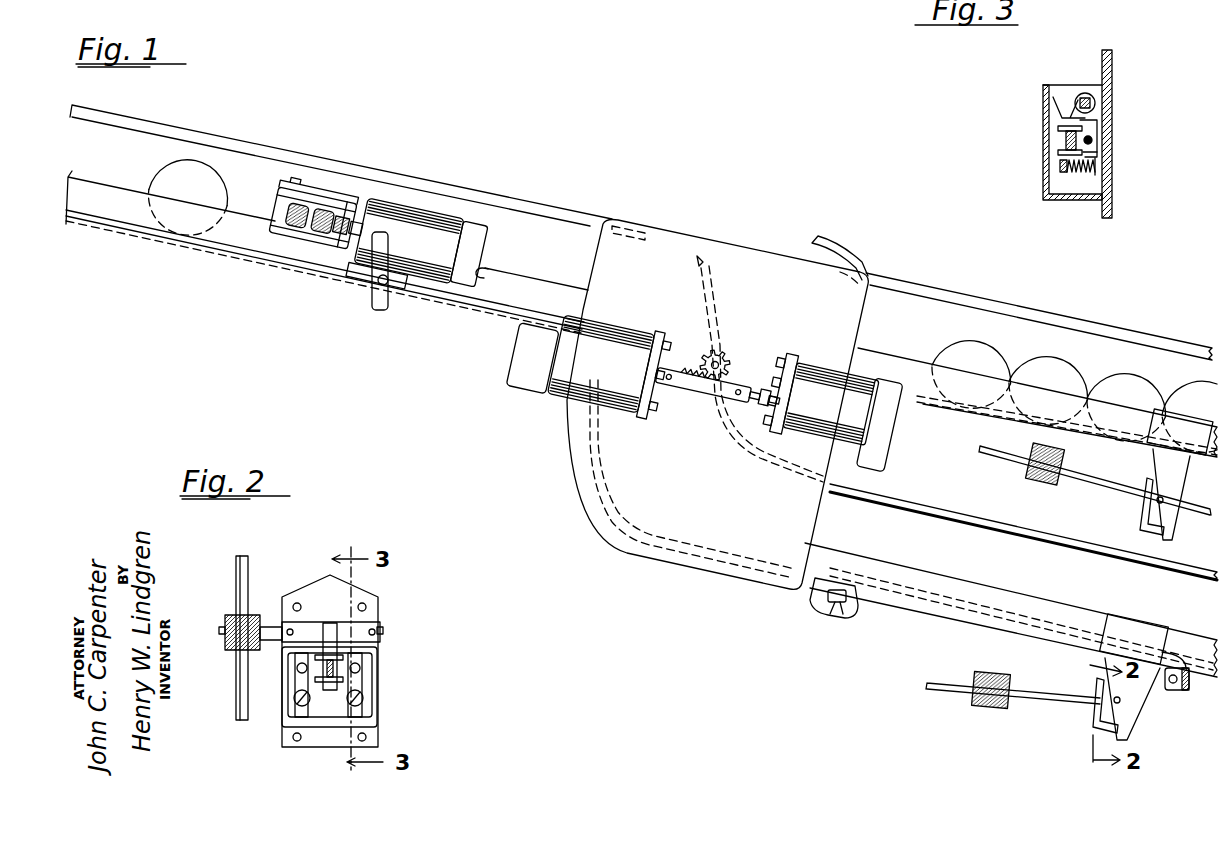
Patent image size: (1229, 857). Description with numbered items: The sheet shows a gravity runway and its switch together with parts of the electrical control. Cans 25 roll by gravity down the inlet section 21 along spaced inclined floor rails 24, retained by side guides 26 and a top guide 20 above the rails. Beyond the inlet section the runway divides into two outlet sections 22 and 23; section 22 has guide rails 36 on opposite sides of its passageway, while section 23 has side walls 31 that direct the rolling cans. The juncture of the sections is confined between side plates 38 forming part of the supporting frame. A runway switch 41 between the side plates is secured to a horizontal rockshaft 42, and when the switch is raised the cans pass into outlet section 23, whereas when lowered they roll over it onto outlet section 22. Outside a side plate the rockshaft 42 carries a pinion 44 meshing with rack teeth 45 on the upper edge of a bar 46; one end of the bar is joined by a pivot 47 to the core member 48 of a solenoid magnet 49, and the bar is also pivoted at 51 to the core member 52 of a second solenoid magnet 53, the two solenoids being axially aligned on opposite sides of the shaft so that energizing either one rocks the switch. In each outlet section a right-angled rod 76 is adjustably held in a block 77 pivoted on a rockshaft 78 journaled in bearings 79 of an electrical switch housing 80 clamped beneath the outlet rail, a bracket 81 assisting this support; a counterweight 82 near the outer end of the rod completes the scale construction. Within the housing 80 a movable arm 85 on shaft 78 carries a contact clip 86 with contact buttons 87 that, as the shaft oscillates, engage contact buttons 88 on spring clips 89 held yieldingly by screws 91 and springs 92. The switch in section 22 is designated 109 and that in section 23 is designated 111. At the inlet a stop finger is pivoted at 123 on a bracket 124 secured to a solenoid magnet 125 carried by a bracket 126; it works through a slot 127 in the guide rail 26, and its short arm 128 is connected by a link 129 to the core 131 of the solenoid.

In FIG. 1, the top guide 20 is at (162, 132).
In FIG. 1, the inlet section 21 is at (258, 168).
In FIG. 1, the outlet section 22 is at (1100, 352).
In FIG. 1, the outlet section 23 is at (1003, 559).
In FIG. 1, the floor rails 24 is at (133, 233).
In FIG. 1, the cans 25 is at (579, 284).
In FIG. 1, the side guides 26 is at (95, 185).
In FIG. 1, the side walls 31 is at (948, 580).
In FIG. 1, the guide rails 36 is at (1113, 405).
In FIG. 1, the side plates 38 is at (655, 228).
In FIG. 1, the runway switch 41 is at (705, 254).
In FIG. 1, the rockshaft 42 is at (720, 362).
In FIG. 1, the pinion 44 is at (708, 354).
In FIG. 1, the rack teeth 45 is at (694, 367).
In FIG. 1, the bar 46 is at (692, 388).
In FIG. 1, the pivot 47 is at (738, 394).
In FIG. 1, the core member 48 is at (757, 404).
In FIG. 1, the magnet 49 is at (828, 384).
In FIG. 1, the pivot 51 is at (669, 372).
In FIG. 1, the core member 52 is at (655, 410).
In FIG. 1, the magnet 53 is at (562, 390).
In FIG. 1, the rod 76 is at (1105, 487).
In FIG. 2, the rod 76 is at (236, 568).
In FIG. 2, the block 77 is at (228, 643).
In FIG. 1, the rockshaft 78 is at (1157, 501).
In FIG. 2, the rockshaft 78 is at (268, 622).
In FIG. 3, the rockshaft 78 is at (1085, 93).
In FIG. 2, the bearings 79 is at (370, 630).
In FIG. 3, the bearings 79 is at (1056, 94).
In FIG. 1, the electrical switch housing 80 is at (1180, 489).
In FIG. 2, the electrical switch housing 80 is at (330, 715).
In FIG. 3, the electrical switch housing 80 is at (1043, 165).
In FIG. 1, the bracket 81 is at (1160, 437).
In FIG. 1, the counterweight 82 is at (1035, 473).
In FIG. 2, the movable arm 85 is at (330, 648).
In FIG. 3, the movable arm 85 is at (1060, 118).
In FIG. 2, the contact clip 86 is at (343, 667).
In FIG. 3, the contact clip 86 is at (1092, 131).
In FIG. 2, the contact buttons 87 is at (367, 673).
In FIG. 3, the contact buttons 87 is at (1100, 140).
In FIG. 3, the contact buttons 88 is at (1068, 142).
In FIG. 2, the spring clips 89 is at (362, 687).
In FIG. 3, the spring clips 89 is at (1096, 152).
In FIG. 2, the screws 91 is at (357, 700).
In FIG. 3, the screws 91 is at (1066, 172).
In FIG. 3, the springs 92 is at (1083, 180).
In FIG. 1, the electrical switch 109 is at (1160, 525).
In FIG. 1, the electrical switch 111 is at (1118, 715).
In FIG. 1, the pivot 123 is at (305, 195).
In FIG. 1, the bracket 124 is at (335, 213).
In FIG. 1, the magnet 125 is at (420, 222).
In FIG. 1, the bracket 126 is at (403, 298).
In FIG. 1, the slot 127 is at (488, 267).
In FIG. 1, the short arm 128 is at (283, 237).
In FIG. 1, the link 129 is at (305, 242).
In FIG. 1, the core 131 is at (340, 248).